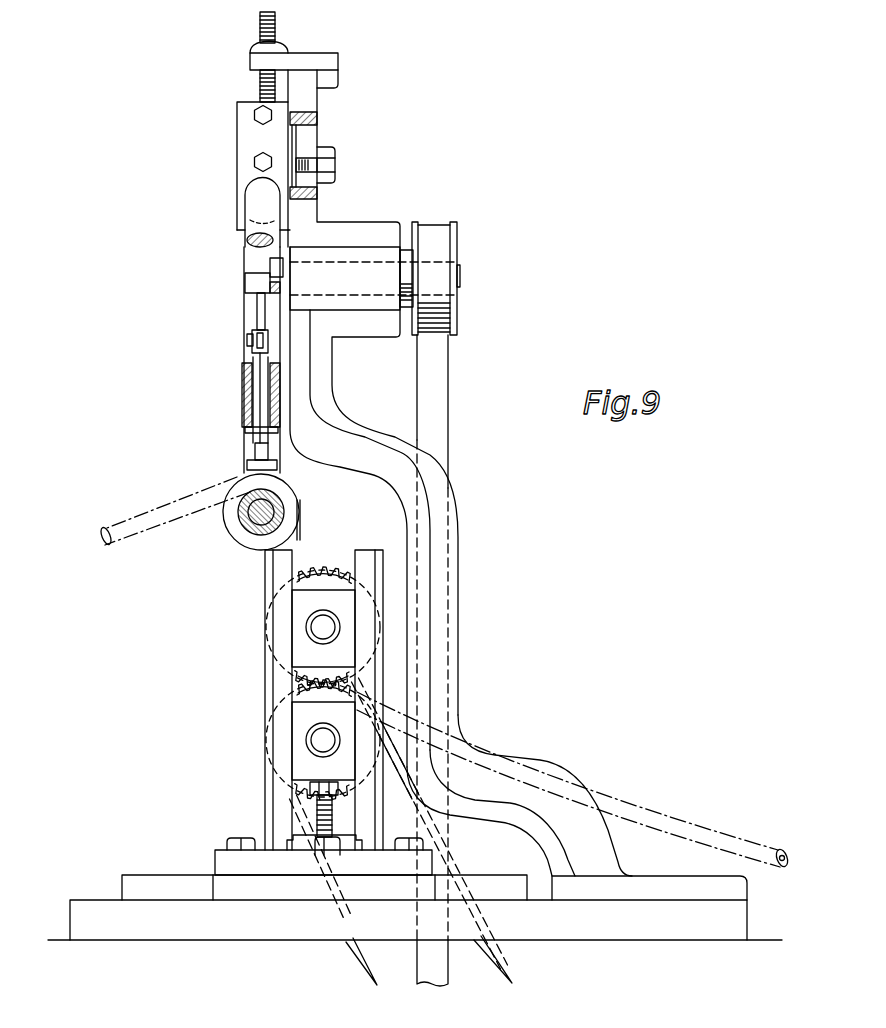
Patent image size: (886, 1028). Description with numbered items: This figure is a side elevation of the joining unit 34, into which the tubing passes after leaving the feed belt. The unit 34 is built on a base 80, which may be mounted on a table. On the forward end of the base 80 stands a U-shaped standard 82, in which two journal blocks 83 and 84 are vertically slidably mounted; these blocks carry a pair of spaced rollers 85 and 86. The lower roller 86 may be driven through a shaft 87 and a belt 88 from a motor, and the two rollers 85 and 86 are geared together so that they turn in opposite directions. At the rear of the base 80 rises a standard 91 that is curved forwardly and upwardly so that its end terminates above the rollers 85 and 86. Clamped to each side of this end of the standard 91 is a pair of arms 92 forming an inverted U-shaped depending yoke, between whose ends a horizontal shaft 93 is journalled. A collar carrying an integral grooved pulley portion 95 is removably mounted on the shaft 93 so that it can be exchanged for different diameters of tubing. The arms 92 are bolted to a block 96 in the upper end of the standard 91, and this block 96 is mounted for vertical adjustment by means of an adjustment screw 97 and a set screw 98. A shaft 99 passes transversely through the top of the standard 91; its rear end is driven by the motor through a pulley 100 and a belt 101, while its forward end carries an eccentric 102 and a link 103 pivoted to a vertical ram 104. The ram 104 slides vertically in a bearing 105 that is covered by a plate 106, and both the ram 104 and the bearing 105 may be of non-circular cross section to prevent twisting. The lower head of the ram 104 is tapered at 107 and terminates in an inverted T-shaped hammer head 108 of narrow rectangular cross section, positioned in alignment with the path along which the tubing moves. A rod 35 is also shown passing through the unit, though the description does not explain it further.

The joining unit 34 is at (340, 116).
The rod 35 is at (640, 807).
The base 80 is at (102, 907).
The U-shaped standard 82 is at (280, 698).
The journal block 83 is at (300, 749).
The journal block 84 is at (305, 649).
The roller 85 is at (330, 576).
The lower roller 86 is at (350, 792).
The shaft 87 is at (320, 744).
The belt 88 is at (506, 969).
The standard 91 is at (438, 682).
The arms 92 is at (248, 249).
The horizontal shaft 93 is at (248, 526).
The grooved pulley portion 95 is at (253, 546).
The block 96 is at (297, 149).
The adjustment screw 97 is at (257, 47).
The set screw 98 is at (337, 172).
The shaft 99 is at (460, 291).
The pulley 100 is at (451, 335).
The belt 101 is at (434, 418).
The eccentric 102 is at (273, 270).
The link 103 is at (258, 312).
The vertical ram 104 is at (260, 391).
The bearing 105 is at (271, 403).
The plate 106 is at (248, 426).
The tapered lower head 107 is at (267, 451).
The hammer head 108 is at (274, 464).